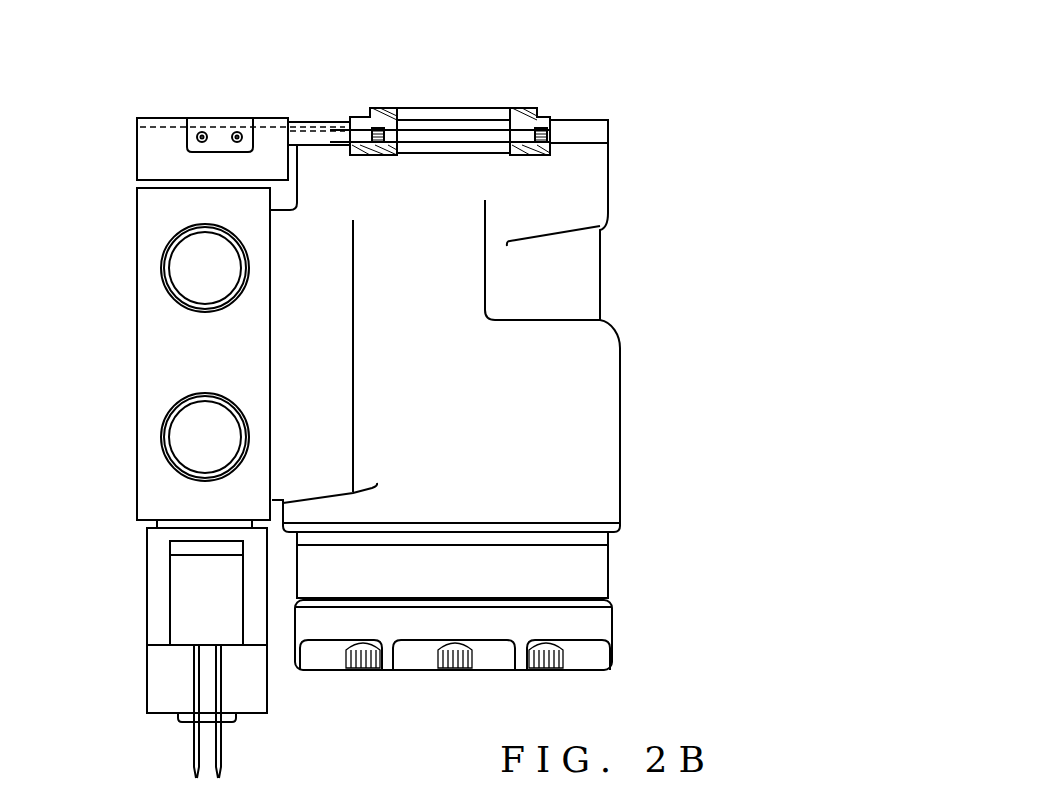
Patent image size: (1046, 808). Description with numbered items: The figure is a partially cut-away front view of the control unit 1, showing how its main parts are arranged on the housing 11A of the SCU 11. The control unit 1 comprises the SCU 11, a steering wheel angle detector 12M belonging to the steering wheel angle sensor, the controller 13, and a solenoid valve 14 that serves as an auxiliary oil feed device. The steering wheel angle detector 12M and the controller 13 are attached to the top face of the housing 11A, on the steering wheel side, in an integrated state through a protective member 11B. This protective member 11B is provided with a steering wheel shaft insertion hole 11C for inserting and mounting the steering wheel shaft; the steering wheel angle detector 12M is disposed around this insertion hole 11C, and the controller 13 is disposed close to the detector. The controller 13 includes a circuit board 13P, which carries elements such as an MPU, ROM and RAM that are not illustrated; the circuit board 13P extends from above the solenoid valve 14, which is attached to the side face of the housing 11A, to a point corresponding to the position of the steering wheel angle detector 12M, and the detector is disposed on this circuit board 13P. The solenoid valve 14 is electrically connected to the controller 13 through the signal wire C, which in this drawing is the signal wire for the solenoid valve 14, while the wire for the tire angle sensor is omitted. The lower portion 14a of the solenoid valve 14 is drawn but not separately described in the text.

The control unit 1 is at (641, 87).
The SCU 11 is at (624, 442).
The housing 11A is at (607, 360).
The protective member 11B is at (305, 118).
The steering wheel shaft insertion hole 11C is at (476, 117).
The steering wheel angle detector 12M is at (366, 118).
The controller 13 is at (152, 154).
The circuit board 13P is at (258, 120).
The solenoid valve 14 is at (147, 353).
The lens unit connector 14a is at (157, 587).
The signal wire C is at (233, 128).